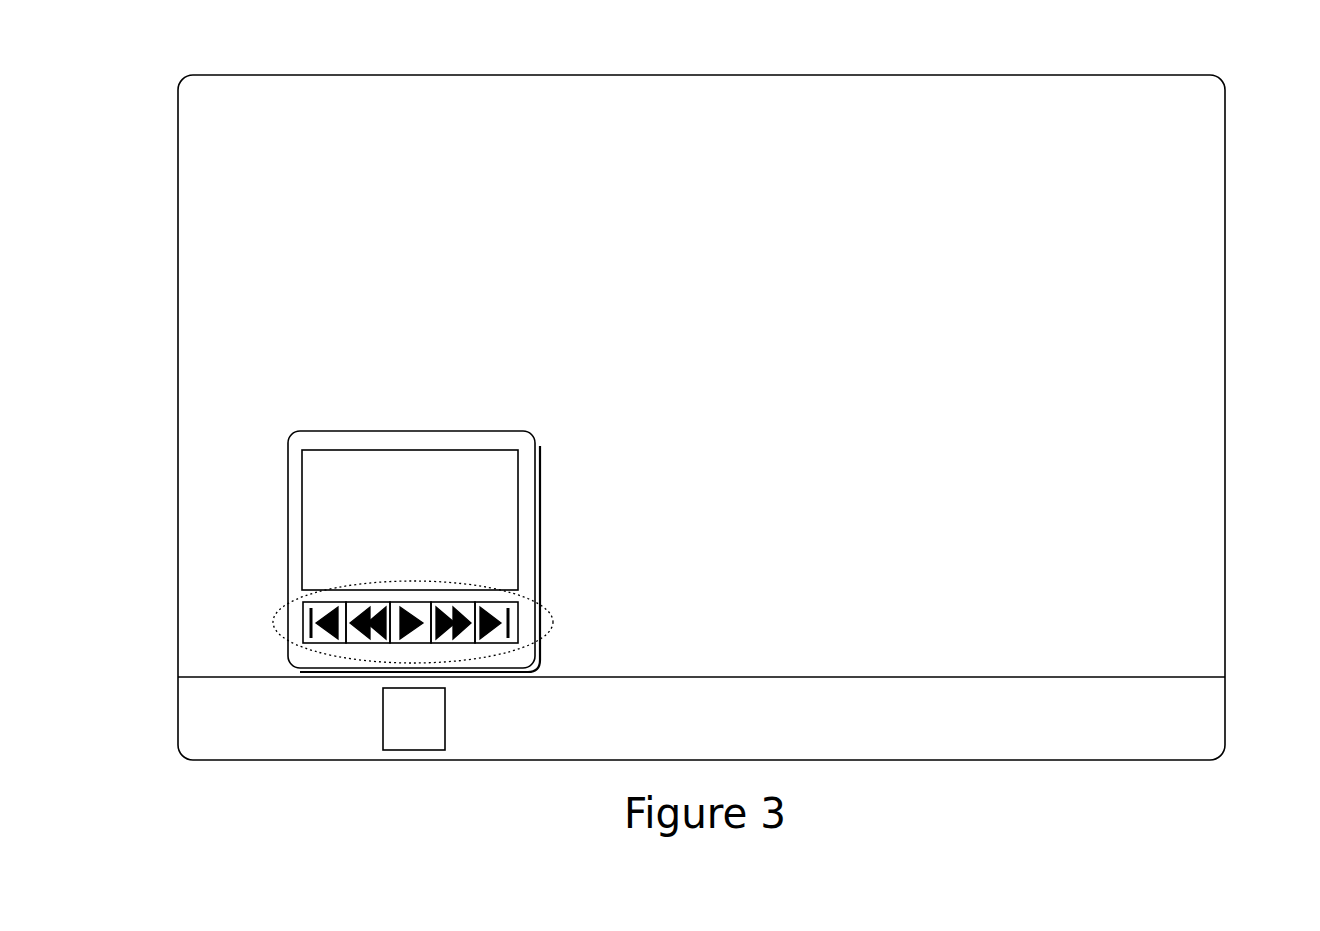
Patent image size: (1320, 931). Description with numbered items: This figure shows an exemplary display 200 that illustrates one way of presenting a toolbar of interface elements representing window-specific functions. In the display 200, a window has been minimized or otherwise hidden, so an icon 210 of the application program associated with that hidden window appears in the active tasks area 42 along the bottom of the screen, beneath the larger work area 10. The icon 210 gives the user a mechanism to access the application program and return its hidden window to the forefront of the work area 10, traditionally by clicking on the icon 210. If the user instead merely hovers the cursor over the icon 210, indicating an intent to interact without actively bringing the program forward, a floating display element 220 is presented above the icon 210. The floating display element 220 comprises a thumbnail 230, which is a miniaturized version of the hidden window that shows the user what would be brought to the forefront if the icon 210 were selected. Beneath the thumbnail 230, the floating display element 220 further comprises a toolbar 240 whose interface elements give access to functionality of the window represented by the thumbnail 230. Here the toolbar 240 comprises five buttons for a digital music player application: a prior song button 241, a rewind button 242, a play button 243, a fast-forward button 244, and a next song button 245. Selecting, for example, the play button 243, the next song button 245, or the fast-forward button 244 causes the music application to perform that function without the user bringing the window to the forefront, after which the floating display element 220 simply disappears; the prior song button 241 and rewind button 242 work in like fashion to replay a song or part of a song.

The work area 10 is at (1198, 268).
The display 200 is at (178, 162).
The active tasks area 42 is at (205, 732).
The icon 210 is at (442, 746).
The floating display element 220 is at (355, 431).
The thumbnail 230 is at (518, 489).
The toolbar 240 is at (548, 613).
The prior song button 241 is at (327, 597).
The rewind button 242 is at (372, 600).
The play button 243 is at (417, 600).
The fast-forward button 244 is at (457, 600).
The next song button 245 is at (505, 600).